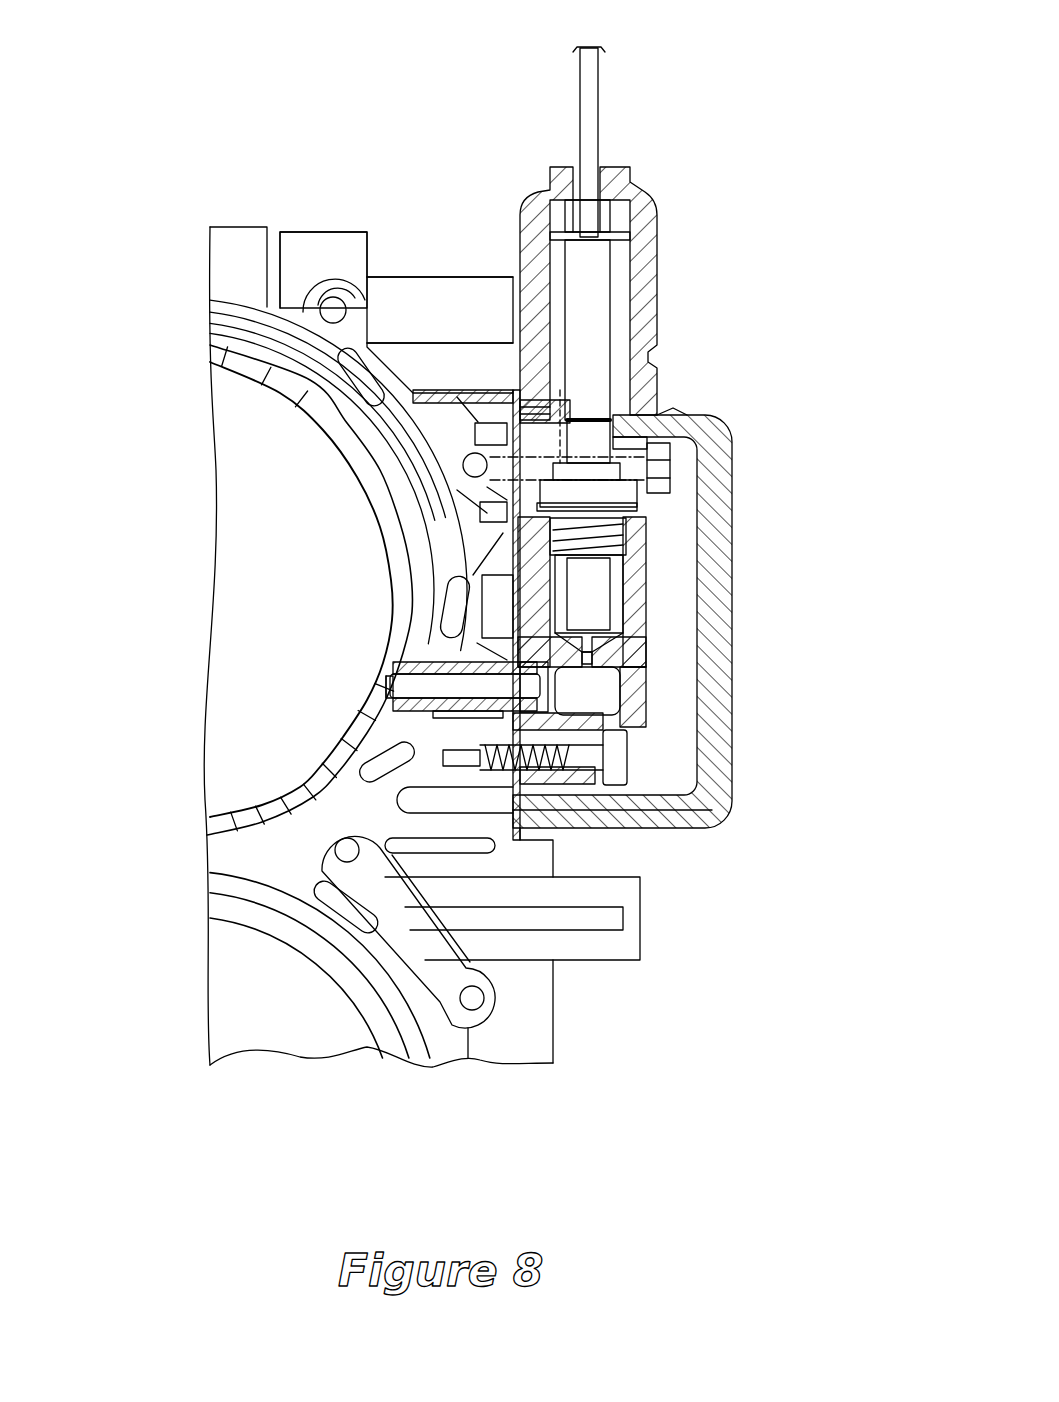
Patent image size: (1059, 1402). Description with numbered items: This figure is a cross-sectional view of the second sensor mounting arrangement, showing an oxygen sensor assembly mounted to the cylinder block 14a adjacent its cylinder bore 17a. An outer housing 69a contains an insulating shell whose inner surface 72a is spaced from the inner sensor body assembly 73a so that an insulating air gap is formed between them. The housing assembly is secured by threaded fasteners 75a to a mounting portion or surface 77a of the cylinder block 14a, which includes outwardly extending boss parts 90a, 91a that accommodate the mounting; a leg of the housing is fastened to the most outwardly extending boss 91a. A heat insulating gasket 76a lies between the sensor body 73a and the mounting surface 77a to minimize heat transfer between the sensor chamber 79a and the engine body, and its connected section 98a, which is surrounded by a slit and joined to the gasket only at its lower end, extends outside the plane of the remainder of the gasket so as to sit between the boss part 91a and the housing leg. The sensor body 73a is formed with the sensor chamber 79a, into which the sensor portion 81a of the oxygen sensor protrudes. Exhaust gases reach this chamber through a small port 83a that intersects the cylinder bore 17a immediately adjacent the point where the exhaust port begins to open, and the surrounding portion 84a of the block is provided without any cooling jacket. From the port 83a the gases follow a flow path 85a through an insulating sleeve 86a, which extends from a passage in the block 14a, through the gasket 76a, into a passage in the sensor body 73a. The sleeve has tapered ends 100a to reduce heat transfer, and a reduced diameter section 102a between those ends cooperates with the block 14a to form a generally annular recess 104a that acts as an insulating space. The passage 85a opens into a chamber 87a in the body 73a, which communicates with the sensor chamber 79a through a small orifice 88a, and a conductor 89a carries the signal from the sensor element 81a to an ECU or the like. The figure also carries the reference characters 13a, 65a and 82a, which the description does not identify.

The cylinder block 13a is at (228, 186).
The cylinder block 14a is at (330, 232).
The cylinder bore 17a is at (243, 435).
The fuel injector assembly 65a is at (738, 112).
The outer housing 69a is at (733, 462).
The inner surface 72a is at (690, 656).
The inner sensor body assembly 73a is at (662, 634).
The threaded fasteners 75a is at (720, 432).
The heat insulating gasket 76a is at (490, 503).
The mounting surface 77a is at (517, 383).
The sensor chamber 79a is at (640, 562).
The sensor portion 81a is at (640, 592).
The solenoid coil 82a is at (622, 313).
The small port 83a is at (387, 682).
The surrounding portion 84a is at (410, 630).
The flow path 85a is at (387, 677).
The insulating sleeve 86a is at (433, 643).
The chamber 87a is at (627, 765).
The small orifice 88a is at (617, 695).
The conductor 89a is at (600, 107).
The boss part 90a is at (500, 553).
The boss part 91a is at (517, 330).
The connected section 98a is at (497, 560).
The tapered ends 100a is at (390, 692).
The reduced diameter section 102a is at (407, 713).
The annular recess 104a is at (490, 713).